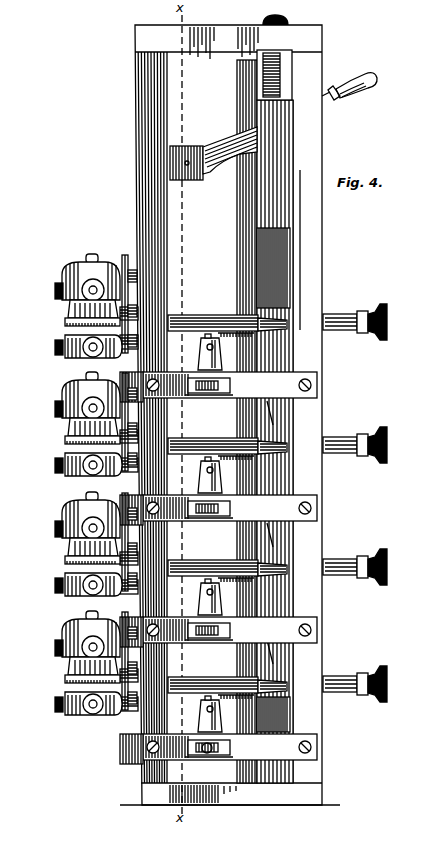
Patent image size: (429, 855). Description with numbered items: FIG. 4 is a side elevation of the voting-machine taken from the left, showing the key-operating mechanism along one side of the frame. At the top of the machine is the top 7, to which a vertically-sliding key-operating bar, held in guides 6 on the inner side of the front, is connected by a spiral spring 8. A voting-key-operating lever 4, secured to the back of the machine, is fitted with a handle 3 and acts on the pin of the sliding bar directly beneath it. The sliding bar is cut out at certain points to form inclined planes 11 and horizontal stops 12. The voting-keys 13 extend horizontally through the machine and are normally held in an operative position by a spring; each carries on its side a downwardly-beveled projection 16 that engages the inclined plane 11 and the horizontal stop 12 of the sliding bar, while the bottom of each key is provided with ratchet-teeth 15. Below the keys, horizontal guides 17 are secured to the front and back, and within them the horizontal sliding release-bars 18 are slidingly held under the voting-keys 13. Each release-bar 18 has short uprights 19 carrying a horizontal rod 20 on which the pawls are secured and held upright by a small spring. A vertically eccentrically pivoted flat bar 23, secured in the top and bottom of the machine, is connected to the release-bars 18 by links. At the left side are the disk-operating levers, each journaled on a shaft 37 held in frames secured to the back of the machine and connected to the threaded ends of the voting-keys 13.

The handle 3 is at (376, 82).
The voting-key-operating lever 4 is at (231, 168).
The guide 6 is at (273, 480).
The top 7 is at (210, 60).
The spiral spring 8 is at (290, 72).
The inclined plane 11 is at (273, 423).
The horizontal stop 12 is at (275, 331).
The voting-key 13 is at (338, 312).
The ratchet-teeth 15 is at (236, 525).
The downwardly-beveled projection 16 is at (245, 313).
The horizontal guide 17 is at (230, 566).
The horizontal sliding release-bar 18 is at (217, 564).
The short upright 19 is at (200, 350).
The horizontal rod 20 is at (204, 346).
The vertically eccentrically pivoted flat bar 23 is at (238, 232).
The shaft 37 is at (68, 300).